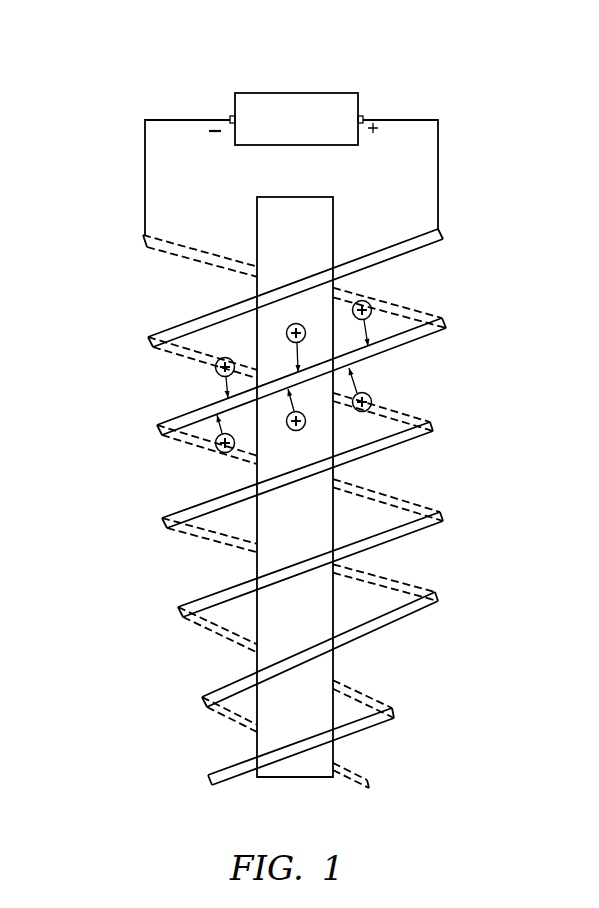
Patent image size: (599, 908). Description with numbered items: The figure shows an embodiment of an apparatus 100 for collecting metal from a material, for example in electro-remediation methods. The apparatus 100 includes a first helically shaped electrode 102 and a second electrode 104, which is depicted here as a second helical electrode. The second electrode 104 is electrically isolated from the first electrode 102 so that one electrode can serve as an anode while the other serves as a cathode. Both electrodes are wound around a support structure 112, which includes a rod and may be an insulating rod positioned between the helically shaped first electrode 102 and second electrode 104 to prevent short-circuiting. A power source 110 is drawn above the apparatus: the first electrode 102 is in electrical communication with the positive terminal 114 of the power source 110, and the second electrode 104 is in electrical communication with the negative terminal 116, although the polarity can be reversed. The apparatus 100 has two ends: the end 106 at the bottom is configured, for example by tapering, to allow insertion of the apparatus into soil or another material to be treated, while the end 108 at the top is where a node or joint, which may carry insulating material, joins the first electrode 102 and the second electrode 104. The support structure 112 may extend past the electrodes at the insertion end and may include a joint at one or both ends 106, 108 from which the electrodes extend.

The apparatus 100 is at (133, 50).
The first helically shaped electrode 102 is at (436, 240).
The second electrode 104 is at (170, 248).
The end of the apparatus 106 is at (330, 792).
The end of the apparatus 108 is at (343, 190).
The power source 110 is at (330, 93).
The support structure 112 is at (310, 513).
The positive terminal 114 is at (362, 116).
The negative terminal 116 is at (231, 116).